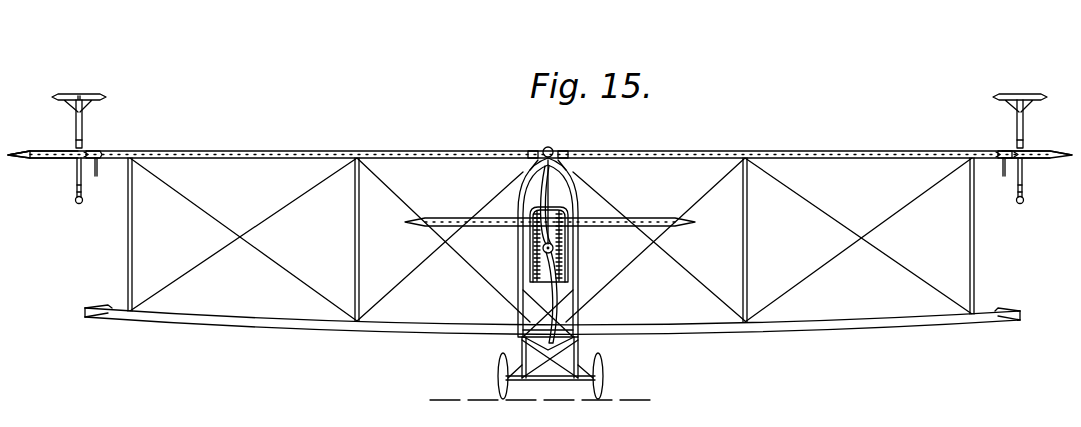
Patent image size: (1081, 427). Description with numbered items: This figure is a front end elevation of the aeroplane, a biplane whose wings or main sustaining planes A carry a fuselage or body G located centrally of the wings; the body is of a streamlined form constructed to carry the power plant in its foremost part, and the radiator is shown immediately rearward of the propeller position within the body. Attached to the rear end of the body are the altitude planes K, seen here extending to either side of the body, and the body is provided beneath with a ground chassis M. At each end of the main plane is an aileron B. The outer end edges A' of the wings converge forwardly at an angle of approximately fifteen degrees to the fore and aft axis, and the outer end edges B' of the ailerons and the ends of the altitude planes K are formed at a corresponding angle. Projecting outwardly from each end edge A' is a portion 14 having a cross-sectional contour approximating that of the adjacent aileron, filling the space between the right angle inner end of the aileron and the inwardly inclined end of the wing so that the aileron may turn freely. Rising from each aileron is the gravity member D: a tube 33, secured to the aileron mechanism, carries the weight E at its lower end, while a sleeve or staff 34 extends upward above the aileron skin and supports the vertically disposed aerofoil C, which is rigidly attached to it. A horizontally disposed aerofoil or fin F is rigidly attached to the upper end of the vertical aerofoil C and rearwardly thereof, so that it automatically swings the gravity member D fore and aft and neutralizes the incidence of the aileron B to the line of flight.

The wings or main sustaining planes A is at (540, 228).
The end edges of the wings A' is at (551, 138).
The ailerons B is at (540, 140).
The outer end edges of the ailerons B' is at (15, 135).
The vertically disposed aerofoil C is at (82, 113).
The gravity member D is at (76, 174).
The weight E is at (78, 204).
The horizontally disposed aerofoil or fin F is at (79, 93).
The fuselage or body G is at (579, 271).
The altitude planes K is at (456, 218).
The ground chassis M is at (548, 382).
The portion projecting from the wing end edge 14 is at (96, 160).
The tube 33 is at (76, 190).
The sleeve 34 is at (76, 145).